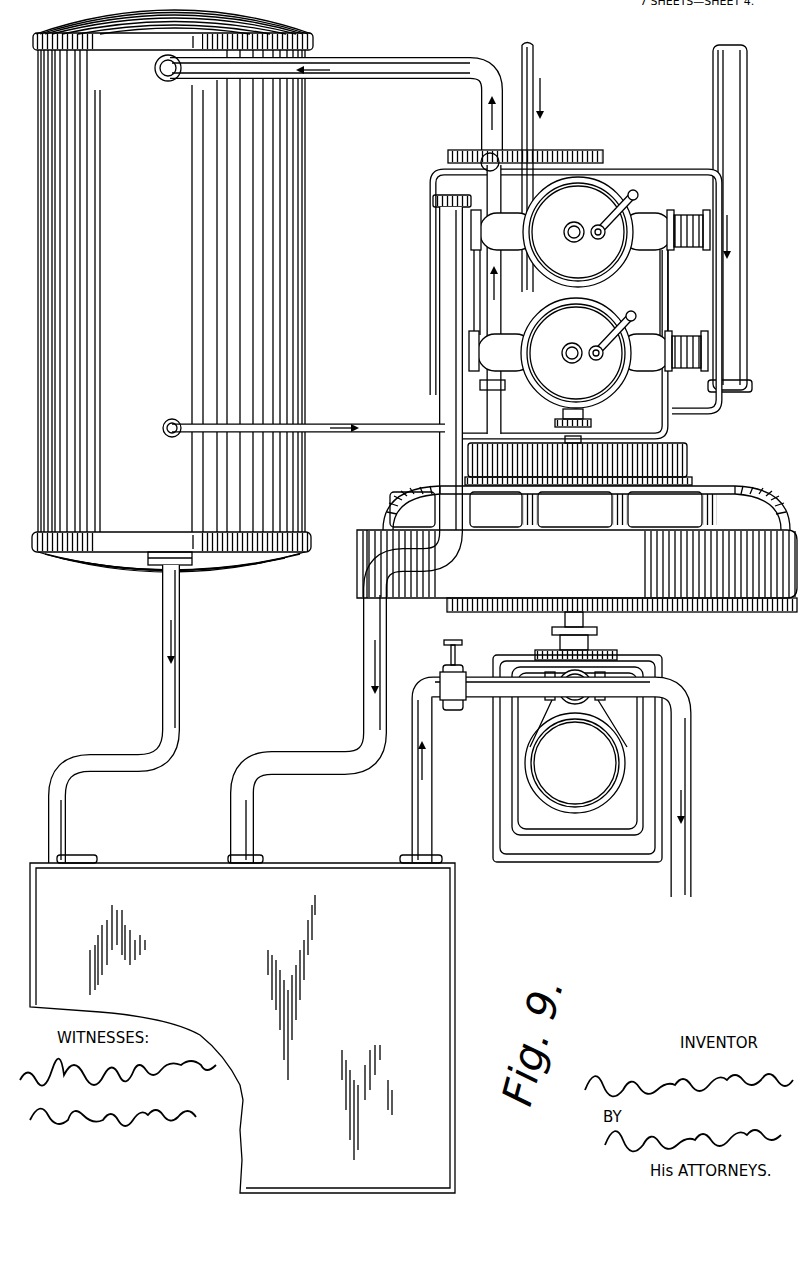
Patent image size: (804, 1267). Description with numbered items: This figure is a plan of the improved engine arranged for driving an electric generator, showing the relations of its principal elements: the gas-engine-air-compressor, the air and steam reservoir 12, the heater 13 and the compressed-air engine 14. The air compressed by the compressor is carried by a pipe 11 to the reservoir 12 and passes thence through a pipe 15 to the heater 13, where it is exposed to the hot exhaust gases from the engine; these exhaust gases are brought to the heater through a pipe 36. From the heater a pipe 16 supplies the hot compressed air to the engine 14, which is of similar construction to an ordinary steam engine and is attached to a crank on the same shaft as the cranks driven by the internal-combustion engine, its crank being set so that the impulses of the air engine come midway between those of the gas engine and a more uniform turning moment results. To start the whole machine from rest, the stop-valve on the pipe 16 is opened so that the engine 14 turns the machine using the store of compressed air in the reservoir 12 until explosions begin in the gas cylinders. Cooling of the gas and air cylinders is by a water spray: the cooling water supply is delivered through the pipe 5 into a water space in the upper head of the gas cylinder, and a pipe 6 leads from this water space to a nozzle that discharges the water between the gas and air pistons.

The pipe 5 is at (520, 95).
The pipe 6 is at (628, 195).
The pipe 11 is at (433, 80).
The reservoir 12 is at (300, 262).
The heater 13 is at (185, 872).
The compressed-air engine 14 is at (565, 803).
The pipe 15 is at (160, 730).
The pipe 16 is at (445, 652).
The pipe 36 is at (445, 425).